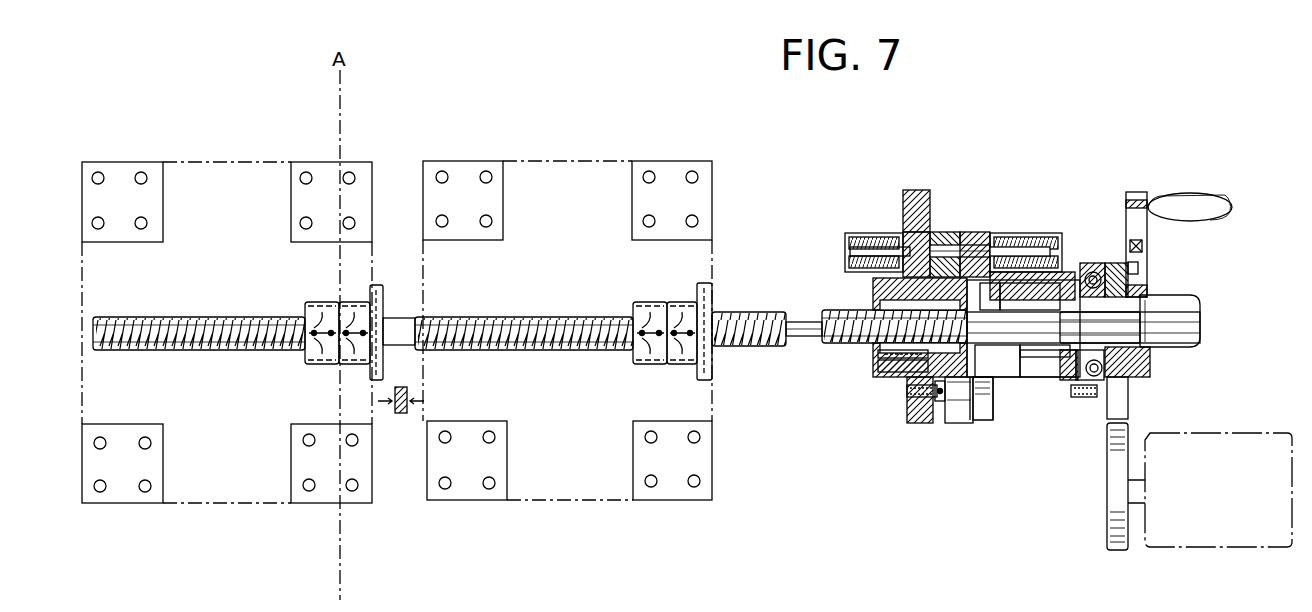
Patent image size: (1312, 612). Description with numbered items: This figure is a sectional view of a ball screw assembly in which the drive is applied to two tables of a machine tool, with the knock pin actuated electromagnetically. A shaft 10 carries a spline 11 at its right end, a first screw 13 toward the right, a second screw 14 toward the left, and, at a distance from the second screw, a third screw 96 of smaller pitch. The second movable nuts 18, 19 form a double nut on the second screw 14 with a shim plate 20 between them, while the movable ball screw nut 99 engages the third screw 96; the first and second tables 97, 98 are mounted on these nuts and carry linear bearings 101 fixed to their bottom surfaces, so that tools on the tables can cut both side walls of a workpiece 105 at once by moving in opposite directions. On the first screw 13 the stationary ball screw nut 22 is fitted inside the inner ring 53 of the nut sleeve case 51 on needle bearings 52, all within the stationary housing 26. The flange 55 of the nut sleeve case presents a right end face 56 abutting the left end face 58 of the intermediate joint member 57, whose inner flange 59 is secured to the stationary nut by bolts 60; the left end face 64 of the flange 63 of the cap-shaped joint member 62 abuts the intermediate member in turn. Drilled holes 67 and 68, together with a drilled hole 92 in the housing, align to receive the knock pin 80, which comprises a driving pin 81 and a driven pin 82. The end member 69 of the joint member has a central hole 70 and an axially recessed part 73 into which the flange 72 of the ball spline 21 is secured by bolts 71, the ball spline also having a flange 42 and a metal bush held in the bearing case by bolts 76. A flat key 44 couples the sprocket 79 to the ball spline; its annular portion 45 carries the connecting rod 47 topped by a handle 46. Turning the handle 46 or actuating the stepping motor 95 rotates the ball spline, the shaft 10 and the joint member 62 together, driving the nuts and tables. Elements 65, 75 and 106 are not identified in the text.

The shaft 10 is at (806, 308).
The spline 11 is at (1150, 320).
The first screw 13 is at (826, 312).
The second screw 14 is at (536, 350).
The second movable nut 18 is at (648, 302).
The second movable nut 19 is at (684, 302).
The shim plate 20 is at (490, 326).
The ball spline 21 is at (1162, 345).
The stationary ball screw nut 22 is at (878, 346).
The stationary housing 26 is at (920, 420).
The flange of the ball spline 42 is at (1150, 365).
The flat key 44 is at (1116, 263).
The annular portion 45 is at (1130, 380).
The handle 46 is at (1185, 200).
The connecting rod 47 is at (1147, 233).
The nut sleeve case 51 is at (910, 372).
The needle bearings 52 is at (910, 380).
The inner ring 53 is at (895, 300).
The flange 55 is at (950, 423).
The right end face 56 is at (975, 418).
The intermediate joint member 57 is at (965, 240).
The left end face 58 is at (945, 240).
The inner flange 59 is at (997, 357).
The bolts 60 is at (980, 298).
The joint member 62 is at (998, 378).
The flange 63 is at (995, 272).
The left end face 64 is at (978, 232).
The plate 65 is at (993, 418).
The drilled hole 67 is at (950, 232).
The drilled hole 68 is at (920, 232).
The end member 69 is at (1070, 345).
The central hole 70 is at (1088, 263).
The bolts 71 is at (1062, 300).
The flange of the ball spline 72 is at (1062, 322).
The axially recessed part 73 is at (1068, 380).
The screw 75 is at (1085, 380).
The bolts 76 is at (947, 400).
The sprocket 79 is at (1140, 266).
The knock pin 80 is at (905, 248).
The driving pin 81 is at (1020, 233).
The driven pin 82 is at (860, 250).
The drilled hole 92 is at (910, 232).
The stepping motor 95 is at (1218, 440).
The third screw 96 is at (200, 350).
The first table 97 is at (462, 168).
The second table 98 is at (227, 335).
The movable ball screw nut 99 is at (316, 364).
The linear bearings 101 is at (118, 170).
The workpiece 105 is at (401, 413).
The nut 106 is at (358, 364).